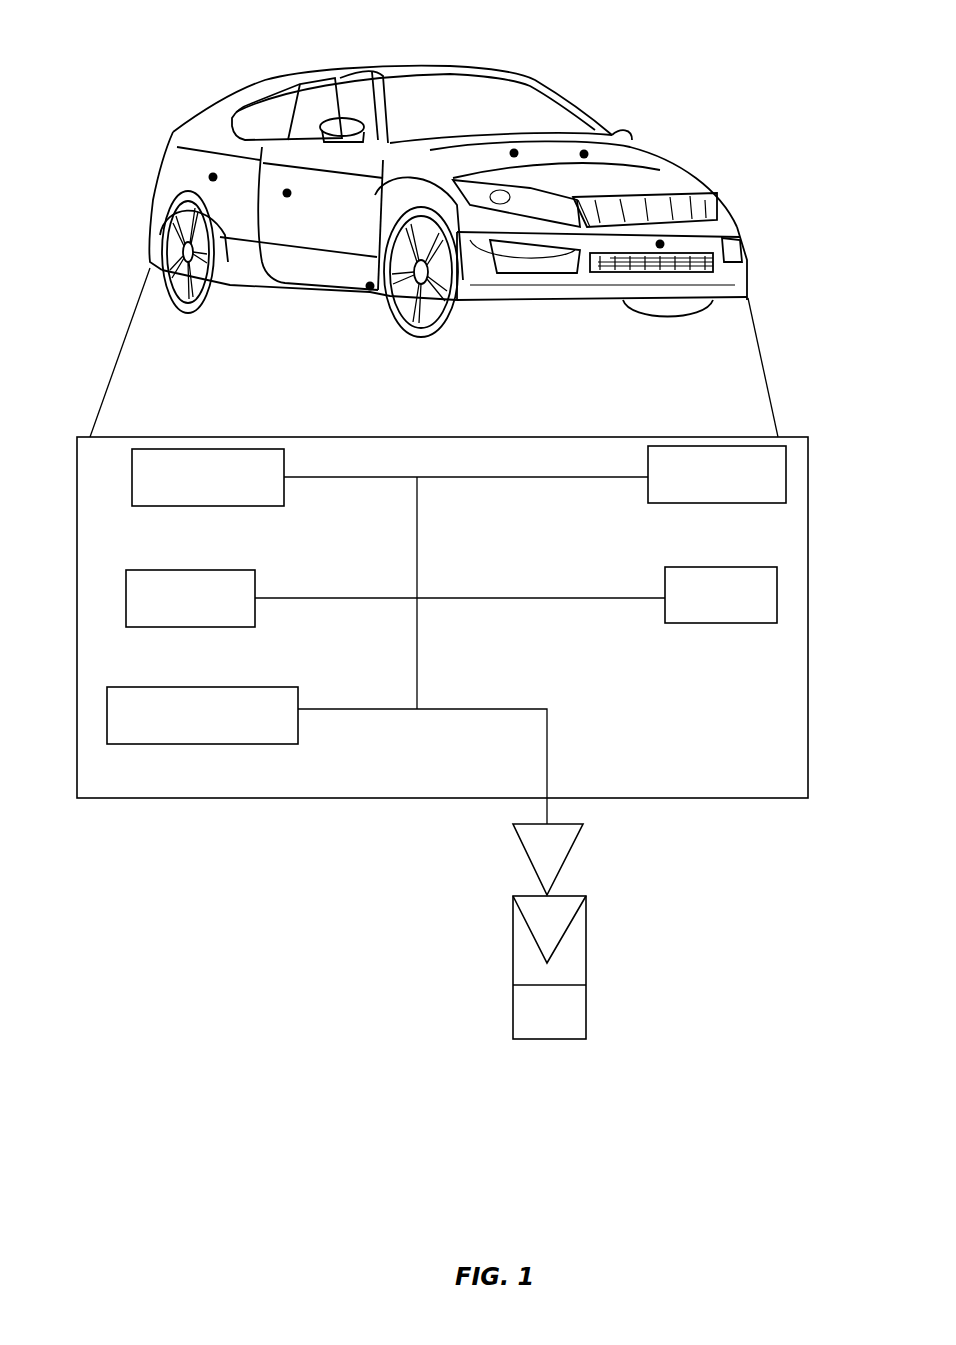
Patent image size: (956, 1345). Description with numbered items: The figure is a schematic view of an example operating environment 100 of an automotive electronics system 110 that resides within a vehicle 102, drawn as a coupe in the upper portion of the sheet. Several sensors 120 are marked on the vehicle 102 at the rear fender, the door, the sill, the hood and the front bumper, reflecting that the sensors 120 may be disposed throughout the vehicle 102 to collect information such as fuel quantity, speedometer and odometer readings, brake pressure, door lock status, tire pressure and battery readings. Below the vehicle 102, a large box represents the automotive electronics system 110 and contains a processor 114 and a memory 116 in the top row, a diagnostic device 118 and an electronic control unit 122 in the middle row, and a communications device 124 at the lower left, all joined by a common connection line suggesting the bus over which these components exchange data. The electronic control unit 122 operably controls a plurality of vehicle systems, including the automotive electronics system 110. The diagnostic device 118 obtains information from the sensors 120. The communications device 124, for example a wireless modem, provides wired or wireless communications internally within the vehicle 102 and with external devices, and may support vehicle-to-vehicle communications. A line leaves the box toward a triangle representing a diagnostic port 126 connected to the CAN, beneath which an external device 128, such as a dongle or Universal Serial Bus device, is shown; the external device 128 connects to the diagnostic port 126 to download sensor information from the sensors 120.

The operating environment 100 is at (131, 38).
The vehicle 102 is at (464, 68).
The automotive electronics system 110 is at (240, 425).
The processor 114 is at (205, 512).
The memory 116 is at (716, 511).
The diagnostic device 118 is at (204, 634).
The sensors 120 is at (213, 177).
The electronic control unit (ECU) 122 is at (729, 633).
The communications device 124 is at (204, 748).
The diagnostic port 126 is at (503, 865).
The external device 128 is at (498, 1068).